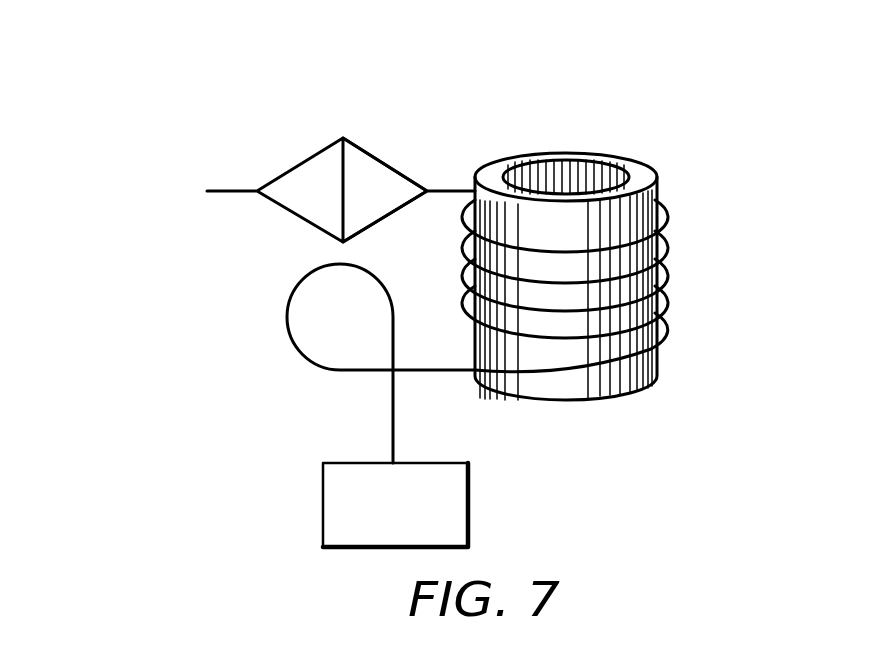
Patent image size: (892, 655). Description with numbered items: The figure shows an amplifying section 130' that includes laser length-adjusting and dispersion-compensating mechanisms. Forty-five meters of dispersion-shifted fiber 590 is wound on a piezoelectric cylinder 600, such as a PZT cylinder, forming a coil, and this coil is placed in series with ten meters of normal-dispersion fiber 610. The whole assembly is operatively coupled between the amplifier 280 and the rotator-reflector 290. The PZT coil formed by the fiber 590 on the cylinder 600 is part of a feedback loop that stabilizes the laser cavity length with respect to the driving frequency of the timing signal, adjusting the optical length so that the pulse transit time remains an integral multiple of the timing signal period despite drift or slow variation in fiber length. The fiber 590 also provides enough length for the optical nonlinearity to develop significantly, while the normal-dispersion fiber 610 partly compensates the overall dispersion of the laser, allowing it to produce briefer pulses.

The amplifying section 130' is at (341, 134).
The amplifier 280 is at (385, 182).
The dispersion-shifted fiber 590 is at (668, 217).
The piezoelectric cylinder 600 is at (617, 378).
The normal-dispersion fiber 610 is at (288, 328).
The rotator-reflector 290 is at (470, 479).